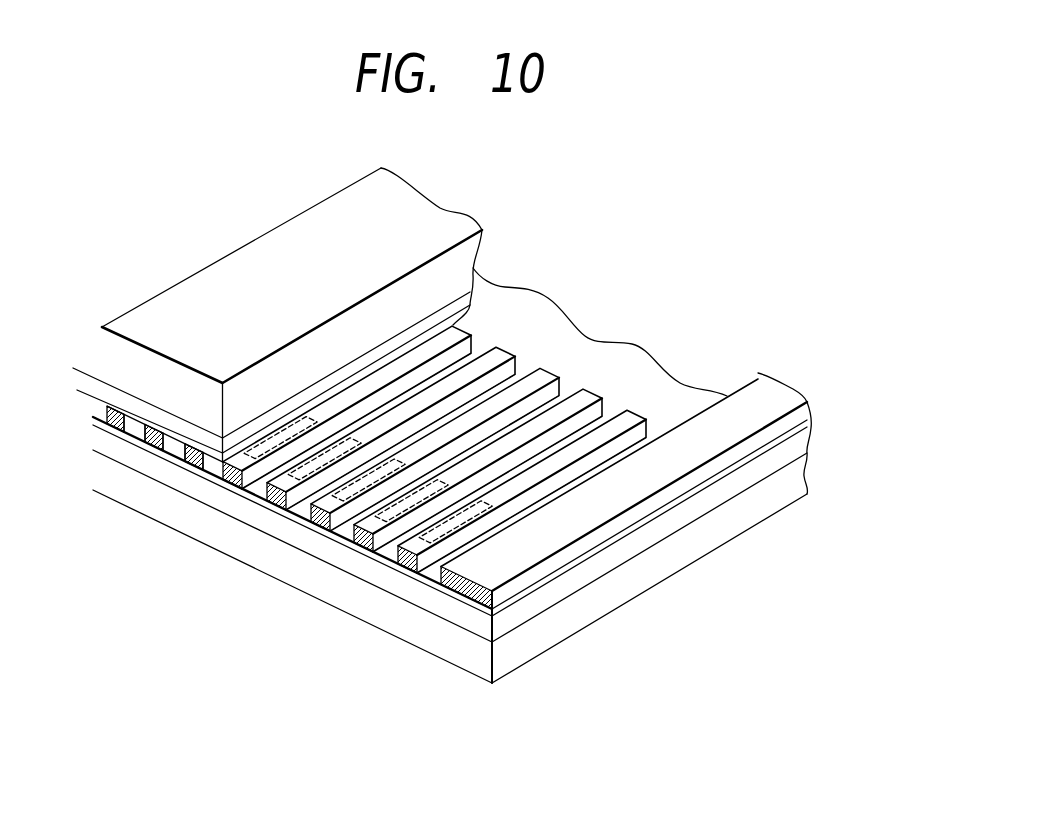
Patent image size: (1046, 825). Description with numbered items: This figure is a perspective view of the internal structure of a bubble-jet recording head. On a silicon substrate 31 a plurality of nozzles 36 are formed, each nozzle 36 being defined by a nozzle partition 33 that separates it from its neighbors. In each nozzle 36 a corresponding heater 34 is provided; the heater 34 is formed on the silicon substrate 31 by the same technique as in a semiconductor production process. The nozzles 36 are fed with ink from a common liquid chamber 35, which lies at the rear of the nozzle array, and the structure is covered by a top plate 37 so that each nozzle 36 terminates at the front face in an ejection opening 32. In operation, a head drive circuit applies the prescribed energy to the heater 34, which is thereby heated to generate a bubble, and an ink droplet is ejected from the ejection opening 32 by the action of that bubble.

The silicon substrate 31 is at (600, 611).
The ejection opening 32 is at (290, 515).
The nozzle partition 33 is at (405, 410).
The heater 34 is at (278, 442).
The common liquid chamber 35 is at (587, 340).
The nozzle 36 is at (475, 400).
The top plate 37 is at (442, 231).